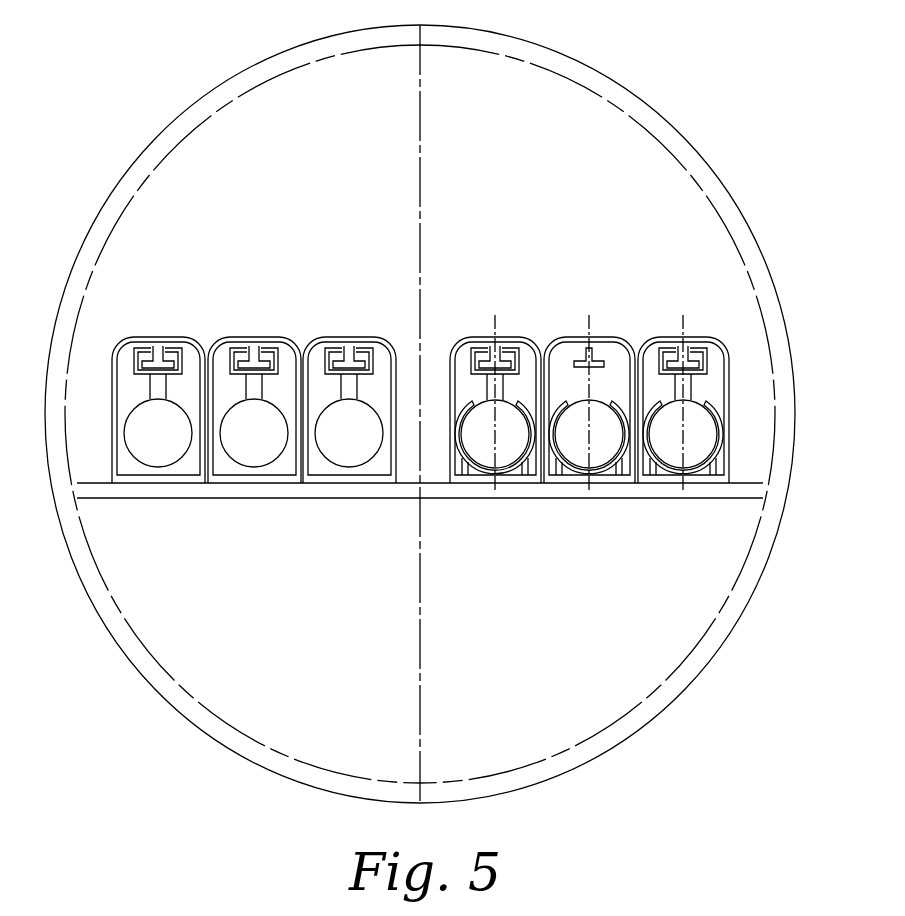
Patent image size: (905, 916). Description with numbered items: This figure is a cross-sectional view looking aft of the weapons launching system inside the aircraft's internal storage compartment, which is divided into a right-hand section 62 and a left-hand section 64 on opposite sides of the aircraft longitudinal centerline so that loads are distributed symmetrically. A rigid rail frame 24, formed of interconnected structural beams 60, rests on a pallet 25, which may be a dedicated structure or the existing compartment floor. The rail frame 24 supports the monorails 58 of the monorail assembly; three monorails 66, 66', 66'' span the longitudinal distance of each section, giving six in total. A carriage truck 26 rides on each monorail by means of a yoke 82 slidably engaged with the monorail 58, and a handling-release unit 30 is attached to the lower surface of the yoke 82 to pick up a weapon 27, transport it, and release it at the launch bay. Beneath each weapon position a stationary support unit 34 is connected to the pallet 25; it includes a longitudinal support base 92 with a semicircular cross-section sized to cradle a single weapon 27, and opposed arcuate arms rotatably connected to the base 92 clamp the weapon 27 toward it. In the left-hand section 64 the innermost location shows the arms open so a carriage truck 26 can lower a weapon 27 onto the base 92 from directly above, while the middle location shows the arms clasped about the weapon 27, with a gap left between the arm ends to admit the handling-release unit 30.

The right-hand section 62 is at (262, 178).
The left-hand section 64 is at (576, 178).
The rail frame 24 is at (118, 337).
The pallet 25 is at (255, 498).
The structural beams 60 is at (112, 395).
The handling-release unit 30 is at (225, 383).
The monorail 66'' is at (177, 332).
The monorail 66' is at (282, 332).
The monorail 66 is at (359, 332).
The yoke 82 is at (367, 355).
The monorail 58 is at (594, 352).
The carriage truck 26 is at (701, 378).
The weapon 27 is at (348, 460).
The longitudinal support base 92 is at (558, 450).
The stationary support unit 34 is at (728, 453).